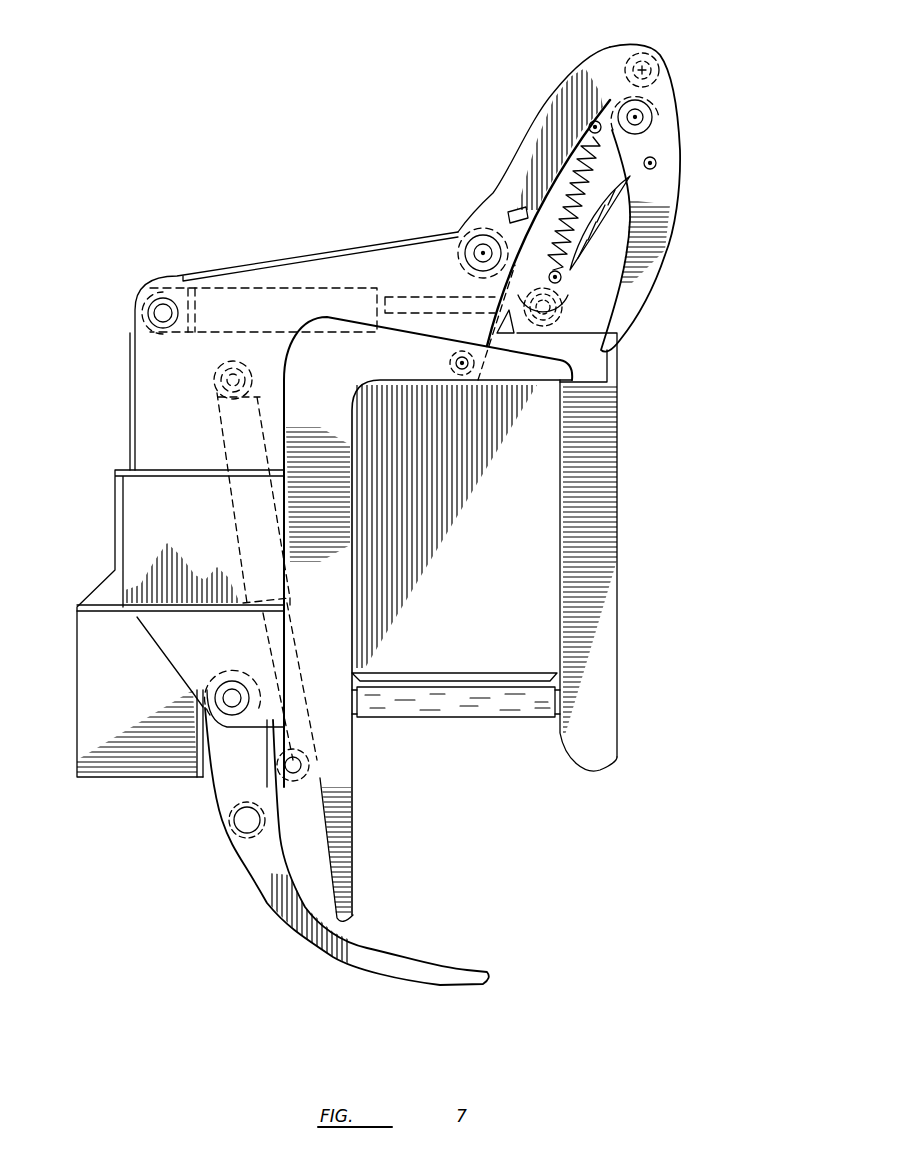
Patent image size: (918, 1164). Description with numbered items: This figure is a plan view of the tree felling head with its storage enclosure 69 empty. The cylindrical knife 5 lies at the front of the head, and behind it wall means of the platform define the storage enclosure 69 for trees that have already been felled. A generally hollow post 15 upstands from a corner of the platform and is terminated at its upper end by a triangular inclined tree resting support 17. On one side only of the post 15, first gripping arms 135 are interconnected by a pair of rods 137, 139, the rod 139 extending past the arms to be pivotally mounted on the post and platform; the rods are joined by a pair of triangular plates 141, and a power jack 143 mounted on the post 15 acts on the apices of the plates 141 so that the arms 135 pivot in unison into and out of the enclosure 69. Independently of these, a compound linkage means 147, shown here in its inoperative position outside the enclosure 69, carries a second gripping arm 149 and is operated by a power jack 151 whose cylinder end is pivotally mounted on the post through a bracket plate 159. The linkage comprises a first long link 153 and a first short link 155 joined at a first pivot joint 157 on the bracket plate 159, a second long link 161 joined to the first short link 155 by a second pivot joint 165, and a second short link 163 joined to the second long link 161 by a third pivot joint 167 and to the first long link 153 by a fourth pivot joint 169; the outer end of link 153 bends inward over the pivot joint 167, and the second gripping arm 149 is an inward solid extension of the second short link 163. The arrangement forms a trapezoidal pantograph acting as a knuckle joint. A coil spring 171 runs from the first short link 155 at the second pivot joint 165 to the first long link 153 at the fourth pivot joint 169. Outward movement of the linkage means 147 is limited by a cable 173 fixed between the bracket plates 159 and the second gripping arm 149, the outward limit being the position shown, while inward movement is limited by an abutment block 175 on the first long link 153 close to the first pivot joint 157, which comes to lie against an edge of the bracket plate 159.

The cylindrical knife 5 is at (453, 700).
The post 15 is at (140, 547).
The tree resting support 17 is at (320, 393).
The storage enclosure 69 is at (487, 623).
The first gripping arm 135 is at (403, 977).
The rod 137 is at (222, 826).
The rod 139 is at (207, 690).
The triangular plate 141 is at (290, 788).
The power jack 143 is at (260, 575).
The compound linkage means 147 is at (507, 153).
The second gripping arm 149 is at (610, 332).
The power jack 151 is at (213, 303).
The first long link 153 is at (508, 177).
The first short link 155 is at (457, 250).
The first pivot joint 157 is at (513, 287).
The bracket plate 159 is at (163, 392).
The second long link 161 is at (605, 157).
The second short link 163 is at (623, 80).
The second pivot joint 165 is at (553, 300).
The third pivot joint 167 is at (647, 118).
The fourth pivot joint 169 is at (657, 67).
The coil spring 171 is at (570, 177).
The cable 173 is at (603, 217).
The abutment block 175 is at (470, 243).